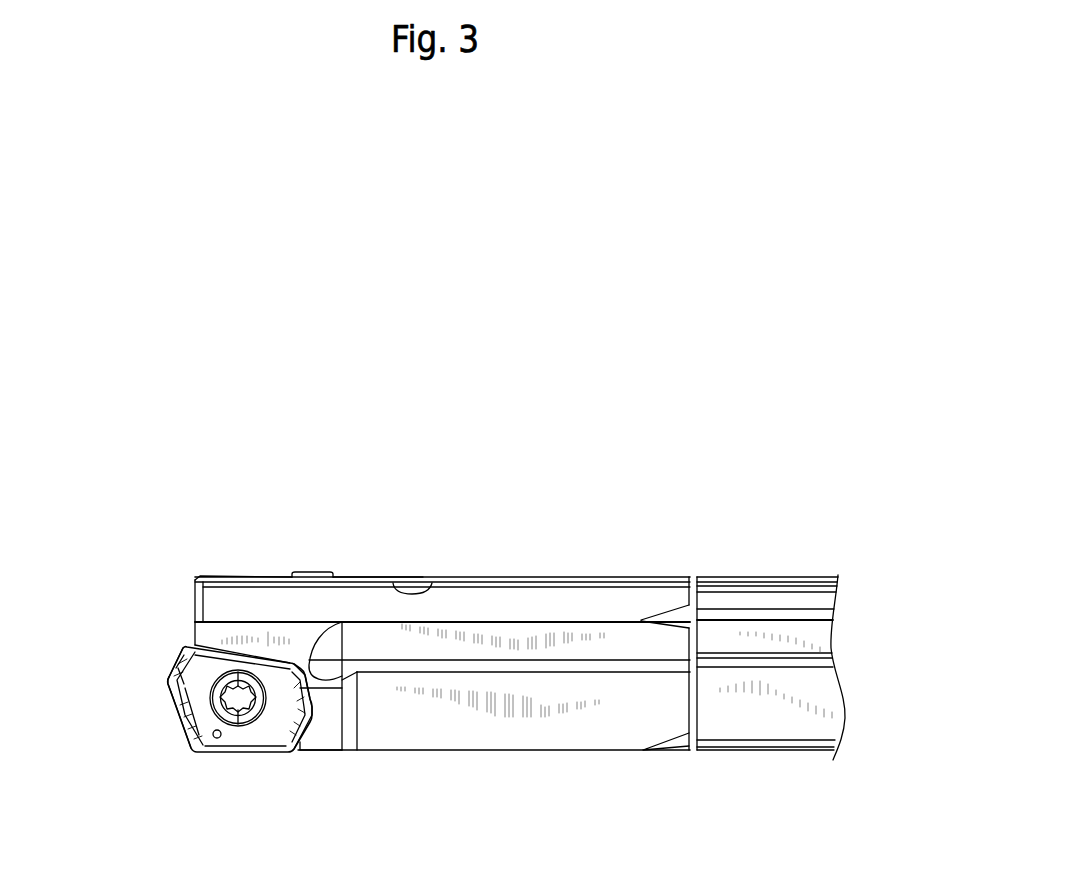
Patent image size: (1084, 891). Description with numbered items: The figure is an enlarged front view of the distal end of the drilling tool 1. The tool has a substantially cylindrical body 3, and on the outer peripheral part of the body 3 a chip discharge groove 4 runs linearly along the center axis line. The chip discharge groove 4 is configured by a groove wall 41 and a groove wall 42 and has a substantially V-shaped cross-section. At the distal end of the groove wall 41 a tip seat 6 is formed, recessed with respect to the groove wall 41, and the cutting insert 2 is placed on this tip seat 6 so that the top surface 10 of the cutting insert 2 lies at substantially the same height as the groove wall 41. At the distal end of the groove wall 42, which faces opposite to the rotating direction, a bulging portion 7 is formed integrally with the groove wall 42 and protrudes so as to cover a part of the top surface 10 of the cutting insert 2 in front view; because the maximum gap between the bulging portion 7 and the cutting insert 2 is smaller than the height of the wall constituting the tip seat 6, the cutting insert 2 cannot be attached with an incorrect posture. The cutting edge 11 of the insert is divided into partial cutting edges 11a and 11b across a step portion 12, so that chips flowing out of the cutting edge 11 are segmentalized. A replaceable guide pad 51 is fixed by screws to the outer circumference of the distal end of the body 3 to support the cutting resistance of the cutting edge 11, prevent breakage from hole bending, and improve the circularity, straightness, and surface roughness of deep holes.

The drilling tool 1 is at (490, 578).
The cutting insert 2 is at (243, 739).
The body 3 is at (665, 578).
The chip discharge groove 4 is at (597, 722).
The groove wall 41 is at (506, 735).
The groove wall 42 is at (582, 632).
The guide pad 51 is at (265, 573).
The tip seat 6 is at (304, 751).
The bulging portion 7 is at (240, 646).
The top surface 10 is at (258, 740).
The cutting edge 11 is at (318, 701).
The partial cutting edge 11a is at (172, 704).
The partial cutting edge 11b is at (70, 693).
The step portion 12 is at (173, 717).